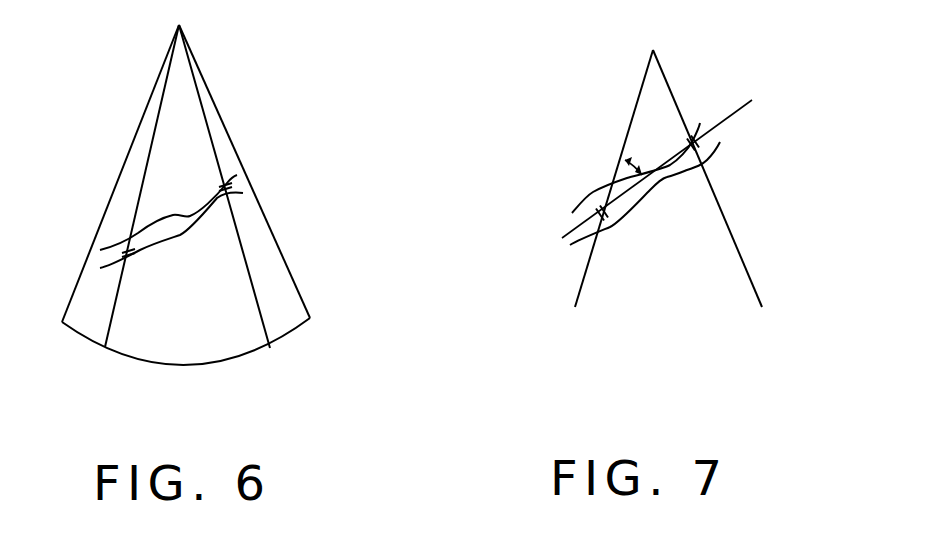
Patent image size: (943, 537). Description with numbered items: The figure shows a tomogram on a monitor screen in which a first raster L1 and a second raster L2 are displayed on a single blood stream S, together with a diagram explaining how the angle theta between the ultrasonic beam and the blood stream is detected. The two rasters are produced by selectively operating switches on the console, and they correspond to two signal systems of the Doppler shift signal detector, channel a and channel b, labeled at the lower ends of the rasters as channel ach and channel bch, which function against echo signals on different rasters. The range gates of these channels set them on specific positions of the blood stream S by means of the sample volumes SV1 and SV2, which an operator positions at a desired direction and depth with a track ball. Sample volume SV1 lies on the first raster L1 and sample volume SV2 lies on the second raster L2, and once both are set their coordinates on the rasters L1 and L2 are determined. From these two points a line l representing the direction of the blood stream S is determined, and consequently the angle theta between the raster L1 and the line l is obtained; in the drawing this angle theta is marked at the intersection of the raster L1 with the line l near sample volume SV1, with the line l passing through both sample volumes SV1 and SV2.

In FIG. 6, the first raster L1 is at (153, 135).
In FIG. 7, the first raster L1 is at (633, 112).
In FIG. 6, the second raster L2 is at (207, 118).
In FIG. 7, the second raster L2 is at (680, 110).
In FIG. 6, the channel a ach is at (120, 208).
In FIG. 6, the channel b bch is at (245, 208).
In FIG. 7, the channel a is at (573, 327).
In FIG. 7, the channel b is at (766, 327).
In FIG. 7, the line l is at (752, 102).
In FIG. 7, the blood stream S is at (660, 180).
In FIG. 7, the sample volume SV1 is at (600, 206).
In FIG. 7, the sample volume SV2 is at (703, 145).
In FIG. 7, the angle theta is at (637, 160).